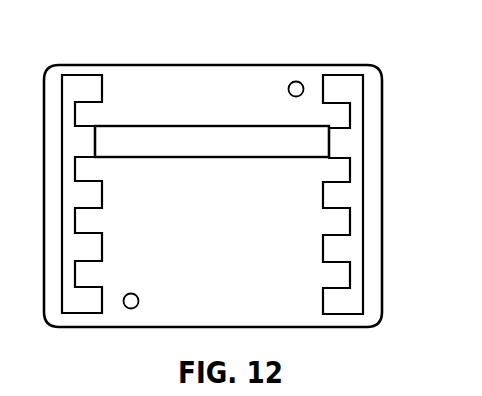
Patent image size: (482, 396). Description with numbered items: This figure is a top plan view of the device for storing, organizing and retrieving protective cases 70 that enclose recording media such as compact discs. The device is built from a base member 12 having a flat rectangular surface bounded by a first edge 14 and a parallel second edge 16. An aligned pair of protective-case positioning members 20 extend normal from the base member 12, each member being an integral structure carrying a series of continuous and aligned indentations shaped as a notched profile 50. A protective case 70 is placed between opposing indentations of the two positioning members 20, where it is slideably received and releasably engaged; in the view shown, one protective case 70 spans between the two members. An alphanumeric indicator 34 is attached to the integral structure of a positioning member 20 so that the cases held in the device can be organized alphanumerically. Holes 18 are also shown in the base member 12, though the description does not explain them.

The base member 12 is at (312, 316).
The first edge 14 is at (43, 272).
The second edge 16 is at (405, 279).
The mounting hole 18 is at (294, 82).
The protective-case positioning member 20 is at (73, 313).
The alphanumeric indicator 34 is at (92, 87).
The notched profile 50 is at (347, 75).
The protective case 70 is at (238, 137).